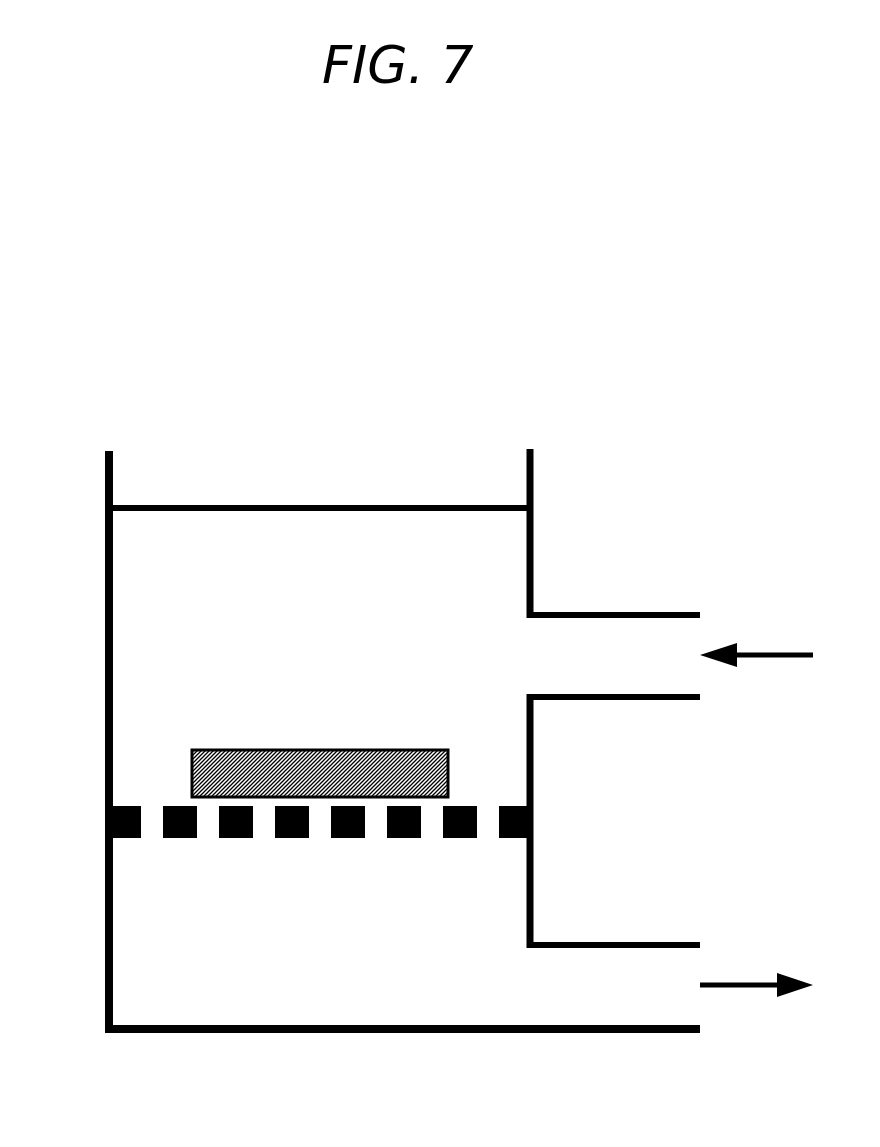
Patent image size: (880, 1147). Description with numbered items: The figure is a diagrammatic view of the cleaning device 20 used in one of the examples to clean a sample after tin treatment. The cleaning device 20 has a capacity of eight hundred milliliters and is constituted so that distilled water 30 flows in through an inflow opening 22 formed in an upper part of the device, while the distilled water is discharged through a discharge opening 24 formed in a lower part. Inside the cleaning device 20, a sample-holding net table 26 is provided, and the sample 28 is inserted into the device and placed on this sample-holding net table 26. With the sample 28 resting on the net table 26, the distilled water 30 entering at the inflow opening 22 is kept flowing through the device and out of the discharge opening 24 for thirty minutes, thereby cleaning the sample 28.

The cleaning device 20 is at (600, 487).
The inflow opening 22 is at (652, 663).
The discharge opening 24 is at (658, 973).
The sample-holding net table 26 is at (232, 840).
The sample 28 is at (215, 752).
The distilled water 30 is at (319, 461).